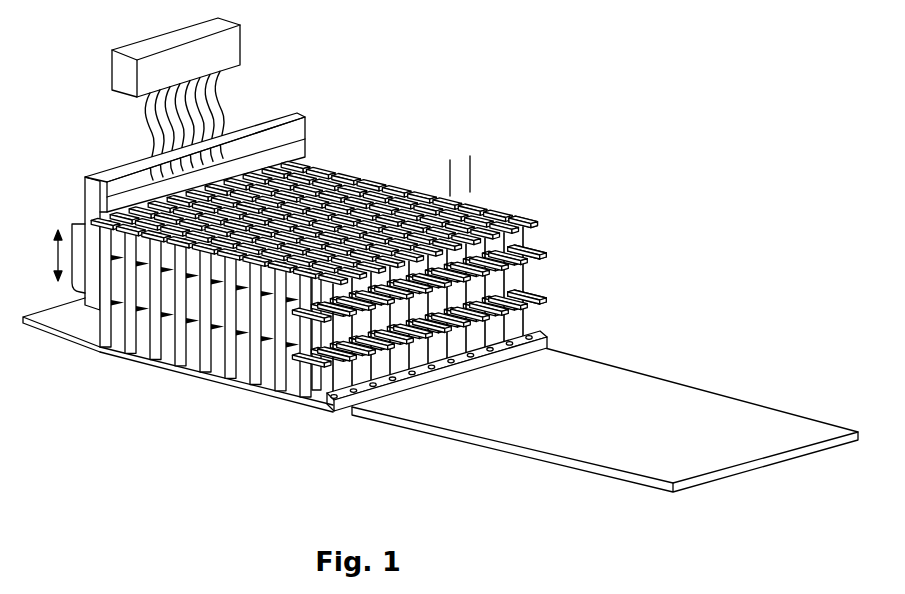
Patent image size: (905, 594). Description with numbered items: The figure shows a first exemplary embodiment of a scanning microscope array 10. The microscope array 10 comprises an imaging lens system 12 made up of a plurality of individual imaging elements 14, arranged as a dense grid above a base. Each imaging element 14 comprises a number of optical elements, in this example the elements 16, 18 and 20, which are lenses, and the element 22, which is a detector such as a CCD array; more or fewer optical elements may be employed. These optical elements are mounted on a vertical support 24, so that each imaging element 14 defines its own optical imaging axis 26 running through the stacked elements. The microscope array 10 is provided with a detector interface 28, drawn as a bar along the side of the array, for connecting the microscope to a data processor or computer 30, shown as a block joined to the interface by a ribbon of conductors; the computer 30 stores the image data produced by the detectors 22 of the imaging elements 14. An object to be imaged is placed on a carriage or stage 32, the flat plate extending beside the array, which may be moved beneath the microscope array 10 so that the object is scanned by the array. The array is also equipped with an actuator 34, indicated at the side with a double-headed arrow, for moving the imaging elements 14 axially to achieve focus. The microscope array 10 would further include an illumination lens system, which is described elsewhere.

The microscope array 10 is at (426, 179).
The imaging lens system 12 is at (601, 217).
The imaging elements 14 is at (341, 275).
The lens 16 is at (538, 334).
The lens 18 is at (532, 294).
The lens 20 is at (530, 253).
The detector 22 is at (545, 217).
The vertical support 24 is at (526, 277).
The optical imaging axis 26 is at (472, 170).
The detector interface 28 is at (306, 121).
The data processor or computer 30 is at (239, 47).
The carriage or stage 32 is at (739, 393).
The actuator 34 is at (83, 222).